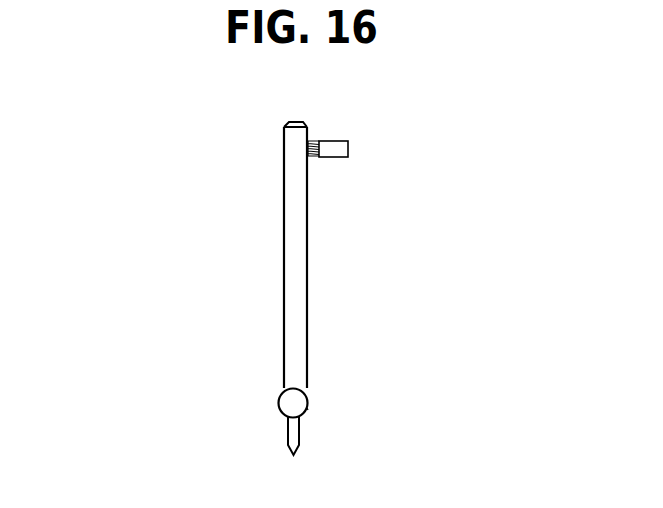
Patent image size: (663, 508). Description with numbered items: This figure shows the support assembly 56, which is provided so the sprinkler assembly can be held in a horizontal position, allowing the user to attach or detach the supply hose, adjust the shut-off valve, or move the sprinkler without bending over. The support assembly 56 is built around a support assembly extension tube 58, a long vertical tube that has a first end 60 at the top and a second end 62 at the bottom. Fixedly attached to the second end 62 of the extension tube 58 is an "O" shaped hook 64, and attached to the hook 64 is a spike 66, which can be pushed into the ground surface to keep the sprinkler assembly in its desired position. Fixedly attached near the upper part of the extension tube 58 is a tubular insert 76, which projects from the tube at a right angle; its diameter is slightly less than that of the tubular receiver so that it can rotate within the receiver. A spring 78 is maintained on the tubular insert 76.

The support assembly 56 is at (243, 230).
The support assembly extension tube 58 is at (302, 264).
The first end 60 is at (298, 121).
The second end 62 is at (297, 386).
The "O" shaped hook 64 is at (308, 410).
The spike 66 is at (293, 436).
The tubular insert 76 is at (347, 151).
The spring 78 is at (318, 141).